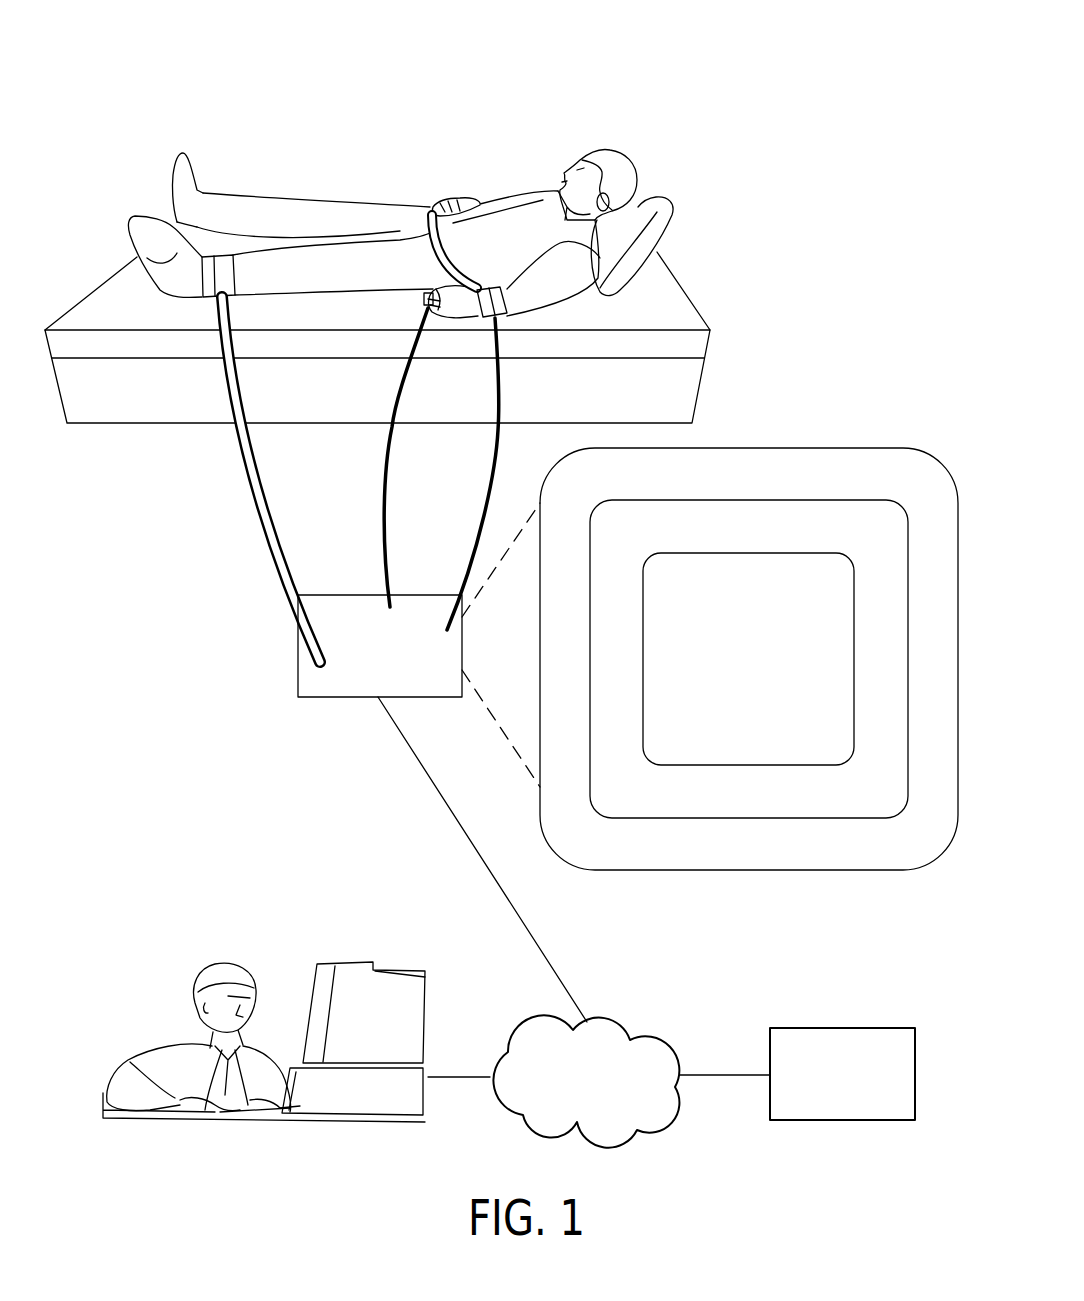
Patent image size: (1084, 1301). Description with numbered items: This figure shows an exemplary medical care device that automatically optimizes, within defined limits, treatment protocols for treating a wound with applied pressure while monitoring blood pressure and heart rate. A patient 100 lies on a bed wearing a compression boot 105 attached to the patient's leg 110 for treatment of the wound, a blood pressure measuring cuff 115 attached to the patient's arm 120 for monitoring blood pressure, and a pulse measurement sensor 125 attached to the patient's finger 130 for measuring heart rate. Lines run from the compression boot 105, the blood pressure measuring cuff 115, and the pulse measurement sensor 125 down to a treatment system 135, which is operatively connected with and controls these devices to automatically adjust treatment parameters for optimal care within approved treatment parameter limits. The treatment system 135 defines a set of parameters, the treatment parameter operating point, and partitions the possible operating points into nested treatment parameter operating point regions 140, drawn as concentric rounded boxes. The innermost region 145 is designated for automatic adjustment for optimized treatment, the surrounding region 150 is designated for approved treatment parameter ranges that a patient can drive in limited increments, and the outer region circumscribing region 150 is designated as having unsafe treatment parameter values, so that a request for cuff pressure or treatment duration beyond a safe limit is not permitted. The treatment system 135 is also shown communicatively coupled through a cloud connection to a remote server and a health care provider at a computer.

The patient 100 is at (320, 86).
The compression boot 105 is at (210, 287).
The patient's leg 110 is at (150, 277).
The blood pressure measuring cuff 115 is at (500, 325).
The patient's arm 120 is at (552, 270).
The pulse measurement sensor 125 is at (451, 318).
The patient's finger 130 is at (428, 295).
The treatment system 135 is at (403, 661).
The treatment parameter operating point regions 140 is at (865, 473).
The region designated for automatic adjustment 145 is at (837, 685).
The region designated for approved patient-driven treatment parameter ranges 150 is at (877, 527).